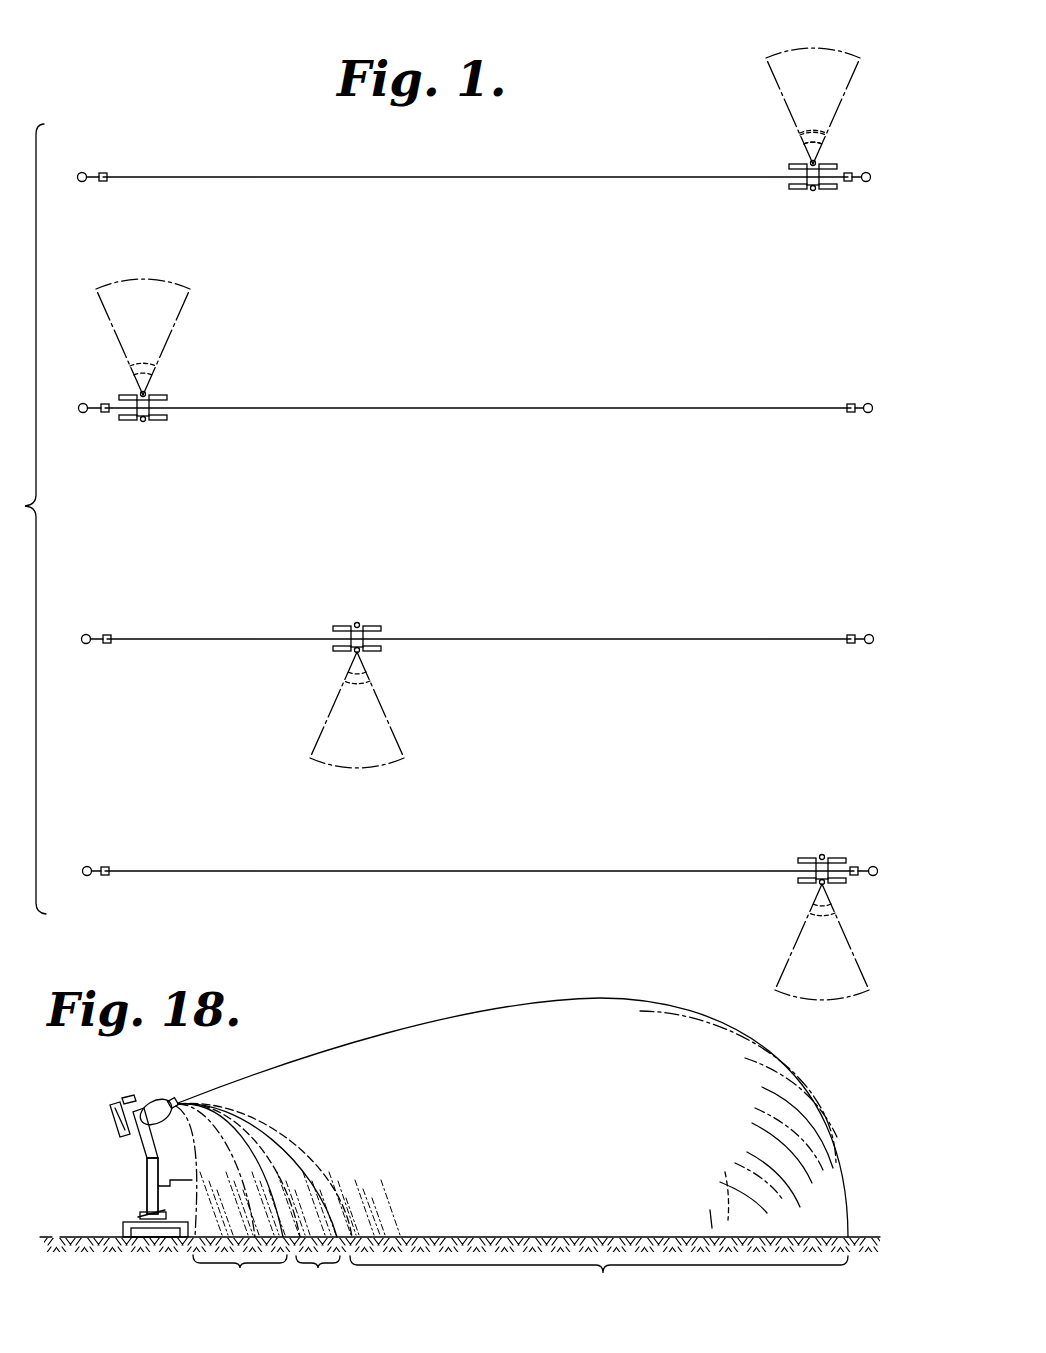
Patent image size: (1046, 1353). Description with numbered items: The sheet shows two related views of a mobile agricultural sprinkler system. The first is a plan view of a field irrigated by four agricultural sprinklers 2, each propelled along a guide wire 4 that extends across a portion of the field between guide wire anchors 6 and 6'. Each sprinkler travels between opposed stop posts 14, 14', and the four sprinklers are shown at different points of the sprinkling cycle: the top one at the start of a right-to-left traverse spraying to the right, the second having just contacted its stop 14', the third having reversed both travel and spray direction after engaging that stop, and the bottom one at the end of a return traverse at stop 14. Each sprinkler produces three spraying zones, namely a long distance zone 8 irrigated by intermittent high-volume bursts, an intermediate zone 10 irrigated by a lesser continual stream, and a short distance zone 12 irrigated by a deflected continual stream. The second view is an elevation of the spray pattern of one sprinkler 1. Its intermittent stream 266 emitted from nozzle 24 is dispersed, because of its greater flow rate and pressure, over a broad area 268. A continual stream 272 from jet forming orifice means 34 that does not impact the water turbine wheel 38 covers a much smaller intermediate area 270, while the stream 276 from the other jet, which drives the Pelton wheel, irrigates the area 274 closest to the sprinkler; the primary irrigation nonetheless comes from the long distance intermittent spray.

In FIG. 18, the sprinkler 1 is at (133, 1150).
In FIG. 1, the agricultural sprinkler 2 is at (788, 190).
In FIG. 1, the guide wire 4 is at (470, 175).
In FIG. 1, the guide wire anchor 6 is at (855, 551).
In FIG. 1, the guide wire anchor 6' is at (76, 497).
In FIG. 1, the long distance zone 8 is at (790, 75).
In FIG. 1, the intermediate zone 10 is at (806, 145).
In FIG. 1, the short distance zone 12 is at (806, 163).
In FIG. 1, the stop post 14 is at (841, 492).
In FIG. 1, the stop post 14' is at (116, 545).
In FIG. 18, the conduit 24 is at (168, 1100).
In FIG. 18, the jet forming orifice means 34 is at (106, 1112).
In FIG. 18, the water turbine wheel 38 is at (128, 1098).
In FIG. 18, the intermittent stream 266 is at (585, 1000).
In FIG. 18, the broad area 268 is at (599, 1183).
In FIG. 18, the intermediate area 270 is at (318, 1279).
In FIG. 18, the continual stream 272 is at (290, 1145).
In FIG. 18, the closest area 274 is at (231, 1204).
In FIG. 18, the stream 276 is at (152, 1190).